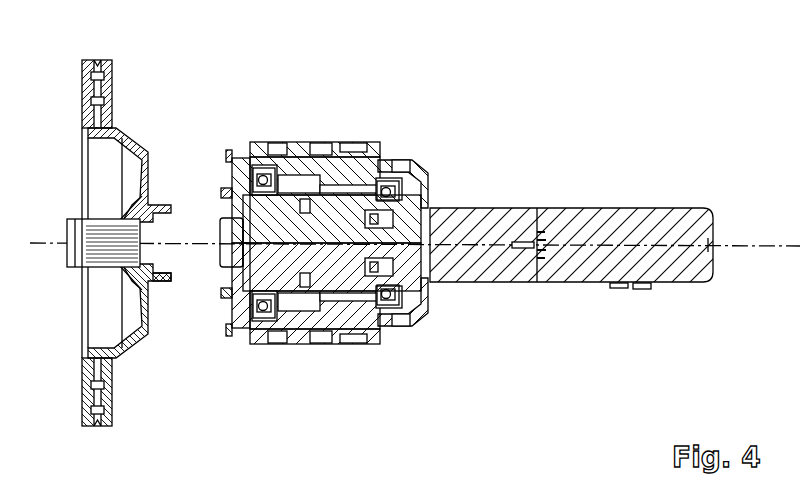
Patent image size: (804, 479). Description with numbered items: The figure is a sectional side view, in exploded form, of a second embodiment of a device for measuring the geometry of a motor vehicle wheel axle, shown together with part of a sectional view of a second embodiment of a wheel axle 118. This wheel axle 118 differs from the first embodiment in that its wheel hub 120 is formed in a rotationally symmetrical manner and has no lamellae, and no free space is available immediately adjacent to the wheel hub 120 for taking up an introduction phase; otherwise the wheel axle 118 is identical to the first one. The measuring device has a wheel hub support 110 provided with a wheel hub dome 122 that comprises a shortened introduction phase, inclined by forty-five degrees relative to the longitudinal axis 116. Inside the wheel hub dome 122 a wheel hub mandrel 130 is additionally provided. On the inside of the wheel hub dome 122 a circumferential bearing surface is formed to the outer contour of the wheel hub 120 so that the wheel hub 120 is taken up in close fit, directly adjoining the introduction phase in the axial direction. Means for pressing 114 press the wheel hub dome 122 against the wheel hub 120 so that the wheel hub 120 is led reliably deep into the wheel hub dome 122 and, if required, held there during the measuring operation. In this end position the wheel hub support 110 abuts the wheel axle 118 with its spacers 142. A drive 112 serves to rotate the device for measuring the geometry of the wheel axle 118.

The wheel hub support 110 is at (216, 176).
The drive 112 is at (608, 218).
The means for pressing 114 is at (403, 162).
The longitudinal axis 116 is at (53, 245).
The wheel axle 118 is at (129, 124).
The wheel hub 120 is at (152, 336).
The wheel hub dome 122 is at (232, 336).
The wheel hub mandrel 130 is at (265, 320).
The spacers 142 is at (228, 150).